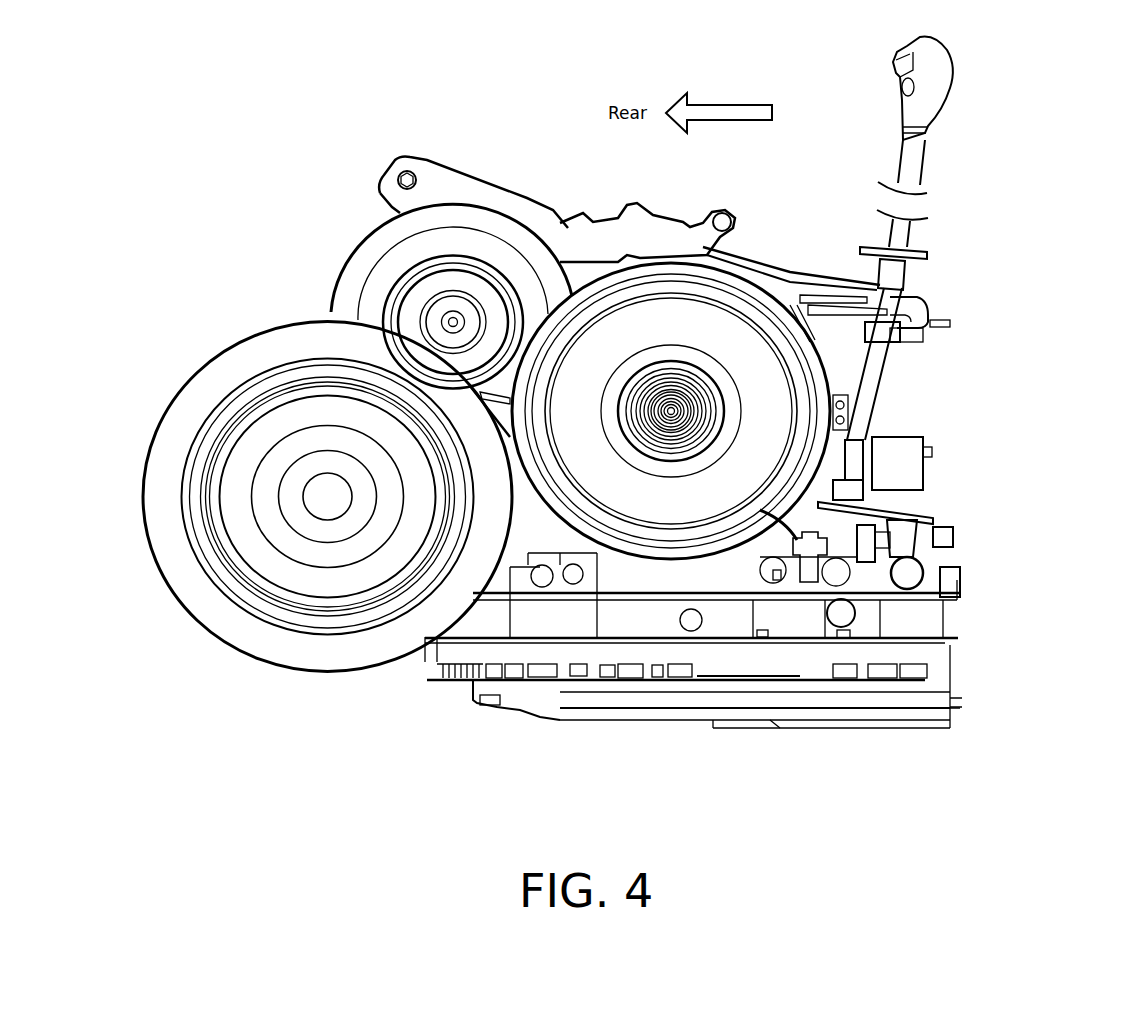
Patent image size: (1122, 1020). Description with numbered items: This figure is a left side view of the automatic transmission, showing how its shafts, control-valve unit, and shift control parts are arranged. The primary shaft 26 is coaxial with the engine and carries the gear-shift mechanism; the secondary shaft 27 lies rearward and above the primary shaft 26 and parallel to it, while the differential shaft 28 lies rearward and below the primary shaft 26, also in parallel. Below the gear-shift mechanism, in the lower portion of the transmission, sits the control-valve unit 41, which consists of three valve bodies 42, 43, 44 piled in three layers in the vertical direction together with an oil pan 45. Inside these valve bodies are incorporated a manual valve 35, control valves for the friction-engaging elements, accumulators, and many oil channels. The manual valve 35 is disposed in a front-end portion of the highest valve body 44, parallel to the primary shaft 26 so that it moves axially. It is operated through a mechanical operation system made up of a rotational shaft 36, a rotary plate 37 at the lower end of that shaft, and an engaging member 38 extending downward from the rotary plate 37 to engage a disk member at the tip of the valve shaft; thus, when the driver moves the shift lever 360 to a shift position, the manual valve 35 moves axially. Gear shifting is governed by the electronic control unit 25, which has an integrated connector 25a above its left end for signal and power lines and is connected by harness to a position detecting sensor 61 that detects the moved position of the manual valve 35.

The shift lever 360 is at (955, 130).
The rotational shaft 36 is at (880, 378).
The secondary shaft 27 is at (453, 320).
The primary shaft 26 is at (687, 403).
The differential shaft 28 is at (327, 497).
The integrated connector 25a is at (912, 453).
The position detecting sensor 61 is at (893, 523).
The rotary plate 37 is at (912, 513).
The electronic control unit 25 is at (953, 513).
The engaging member 38 is at (930, 553).
The manual valve 35 is at (927, 577).
The control-valve unit 41 is at (693, 687).
The valve body 42 is at (847, 650).
The valve body 43 is at (743, 623).
The valve body 44 is at (723, 580).
The oil pan 45 is at (583, 727).